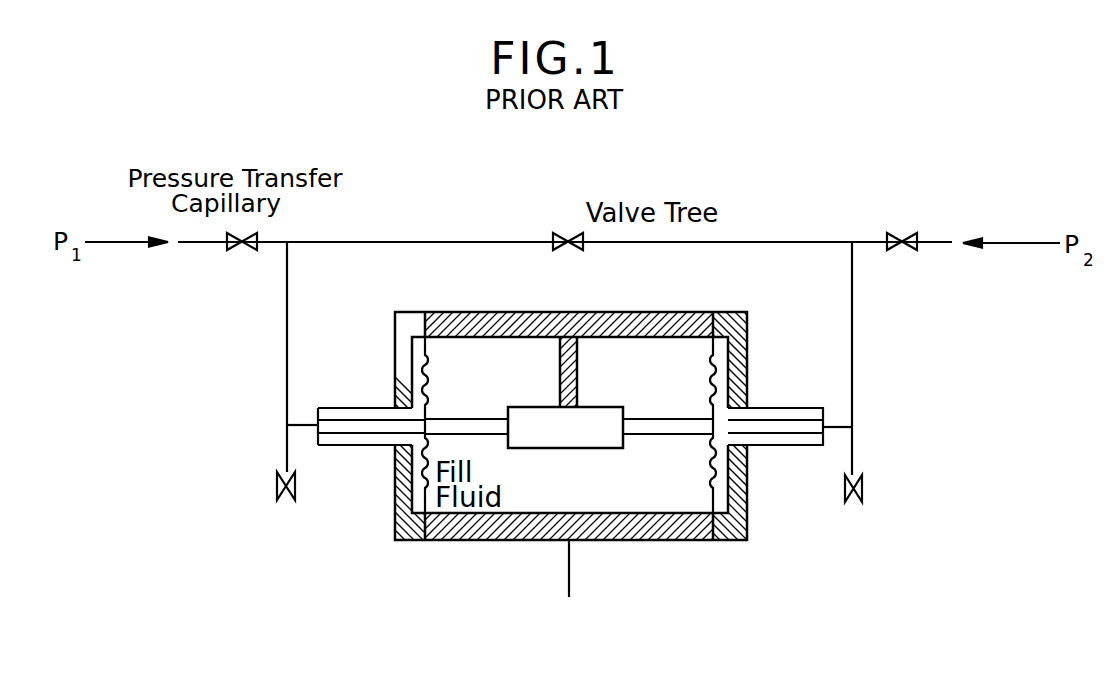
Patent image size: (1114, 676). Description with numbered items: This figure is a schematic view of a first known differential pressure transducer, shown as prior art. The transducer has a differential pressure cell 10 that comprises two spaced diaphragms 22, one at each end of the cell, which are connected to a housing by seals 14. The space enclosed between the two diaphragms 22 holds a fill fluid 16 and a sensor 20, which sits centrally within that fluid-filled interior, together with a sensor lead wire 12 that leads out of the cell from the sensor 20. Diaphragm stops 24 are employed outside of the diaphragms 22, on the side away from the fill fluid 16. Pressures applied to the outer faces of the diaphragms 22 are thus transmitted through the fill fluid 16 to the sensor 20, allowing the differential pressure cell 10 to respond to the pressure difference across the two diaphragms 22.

The differential pressure cell 10 is at (368, 513).
The sensor lead wire 12 is at (569, 587).
The seals 14 is at (568, 540).
The fill fluid 16 is at (400, 472).
The sensor 20 is at (548, 407).
The diaphragms 22 is at (398, 387).
The diaphragm stops 24 is at (747, 472).